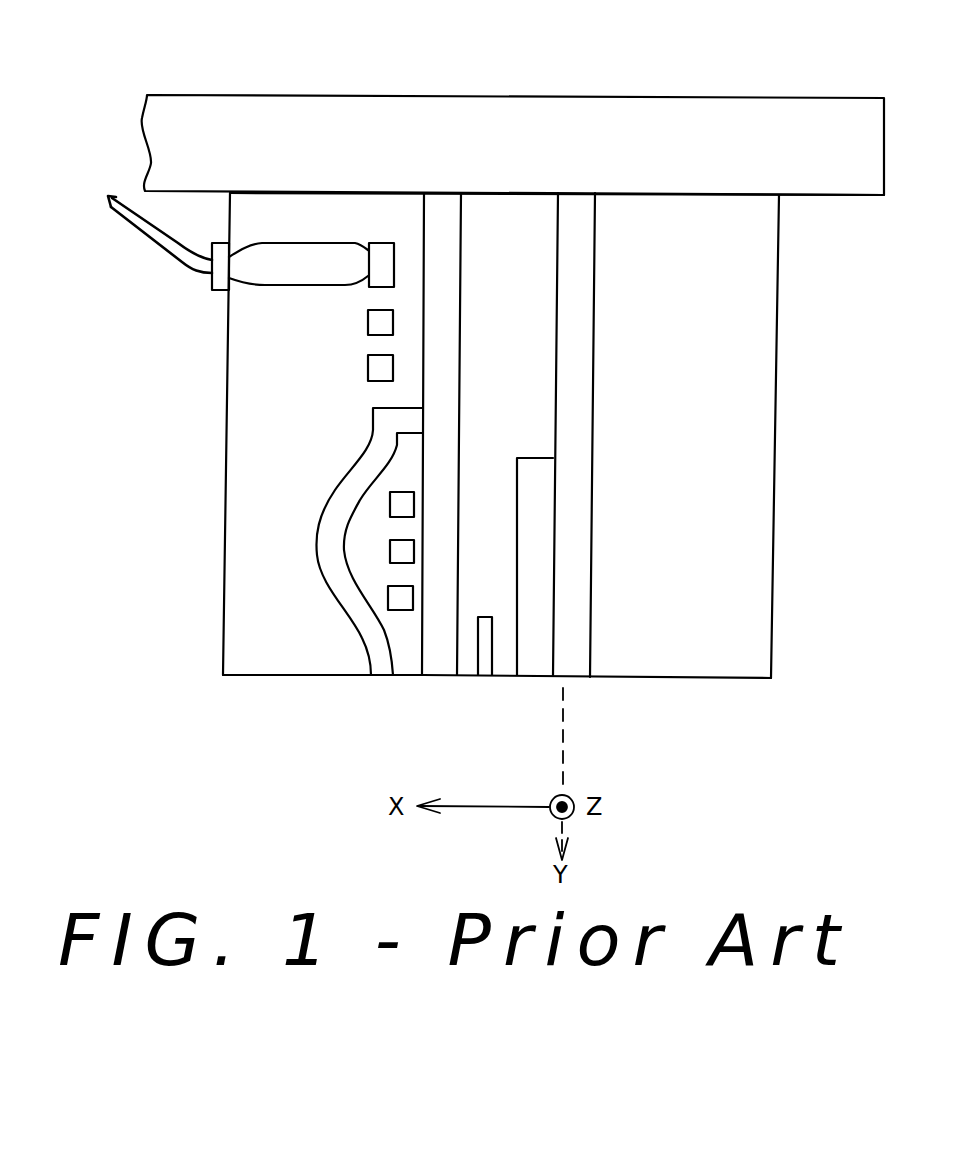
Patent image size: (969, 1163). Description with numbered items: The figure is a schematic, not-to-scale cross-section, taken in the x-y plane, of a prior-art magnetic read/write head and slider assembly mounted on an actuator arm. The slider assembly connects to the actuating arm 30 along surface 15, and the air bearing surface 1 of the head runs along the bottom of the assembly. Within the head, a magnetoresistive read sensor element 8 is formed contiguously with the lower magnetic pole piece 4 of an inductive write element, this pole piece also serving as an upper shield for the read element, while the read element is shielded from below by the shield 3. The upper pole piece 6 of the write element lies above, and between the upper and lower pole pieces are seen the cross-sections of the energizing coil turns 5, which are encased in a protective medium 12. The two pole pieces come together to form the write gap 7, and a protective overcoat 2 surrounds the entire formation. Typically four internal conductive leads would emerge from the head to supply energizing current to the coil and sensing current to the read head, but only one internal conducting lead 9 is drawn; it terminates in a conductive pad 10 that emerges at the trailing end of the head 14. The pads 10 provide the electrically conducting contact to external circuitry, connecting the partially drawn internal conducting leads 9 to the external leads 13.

The air bearing surface 1 is at (271, 676).
The protective overcoat 2 is at (253, 628).
The lower shield 3 is at (570, 647).
The lower magnetic pole piece 4 is at (463, 650).
The energizing coil turns 5 is at (400, 507).
The upper pole piece 6 is at (338, 593).
The write gap 7 is at (405, 663).
The magnetoresistive read sensor element 8 is at (485, 663).
The internal conducting lead 9 is at (303, 268).
The conductive pad 10 is at (220, 278).
The protective medium 12 is at (360, 552).
The external leads 13 is at (146, 232).
The trailing end of the head 14 is at (227, 400).
The connecting surface 15 is at (323, 190).
The actuating arm 30 is at (237, 140).